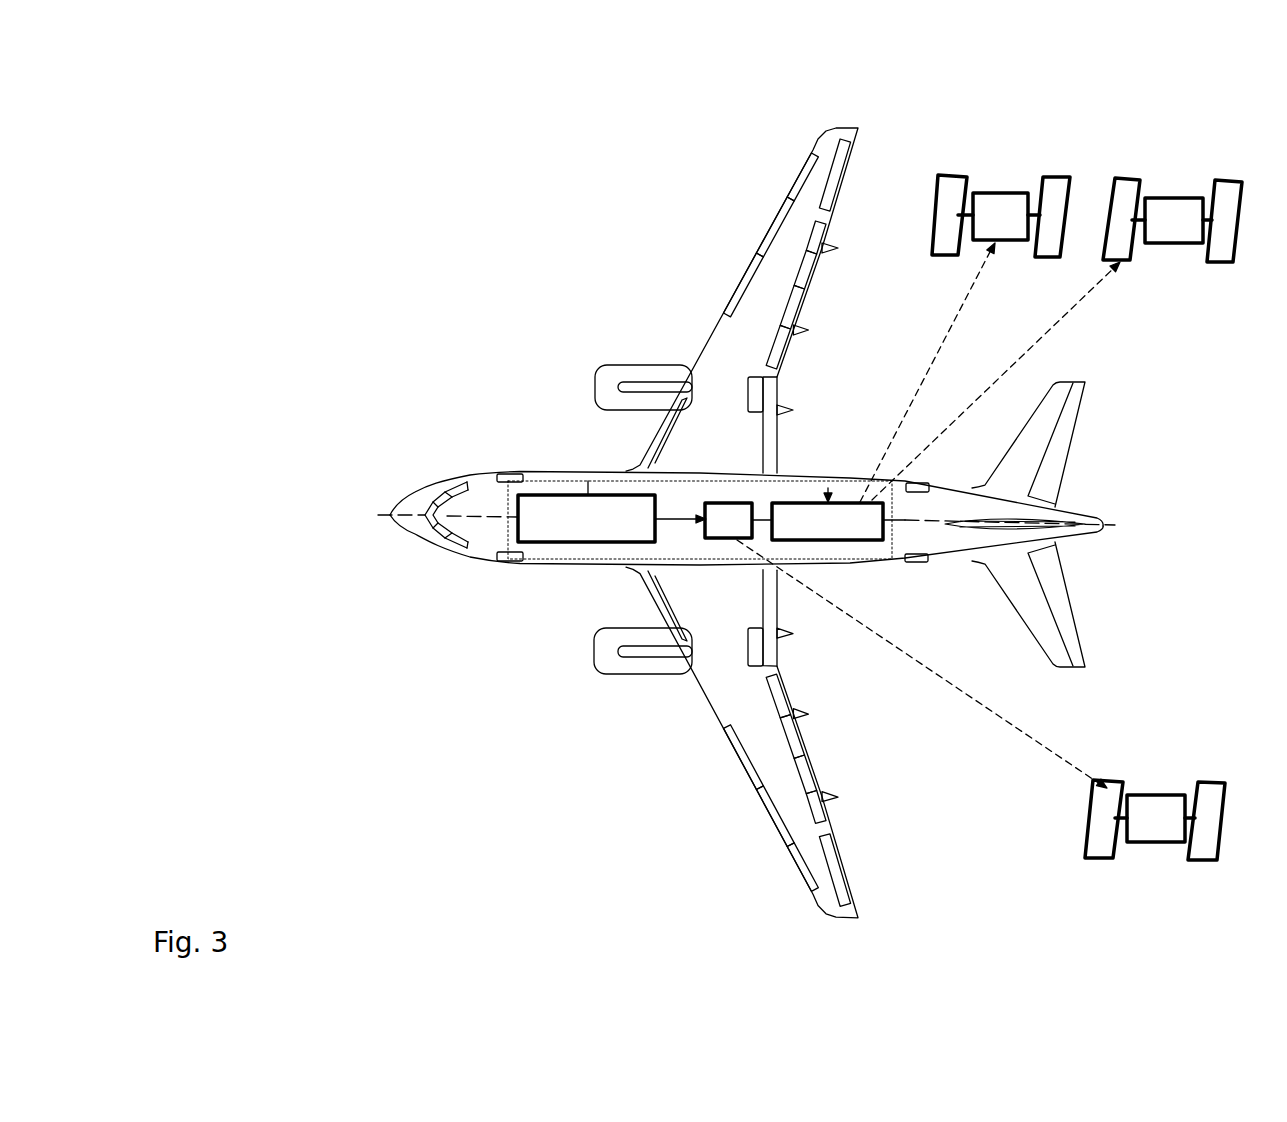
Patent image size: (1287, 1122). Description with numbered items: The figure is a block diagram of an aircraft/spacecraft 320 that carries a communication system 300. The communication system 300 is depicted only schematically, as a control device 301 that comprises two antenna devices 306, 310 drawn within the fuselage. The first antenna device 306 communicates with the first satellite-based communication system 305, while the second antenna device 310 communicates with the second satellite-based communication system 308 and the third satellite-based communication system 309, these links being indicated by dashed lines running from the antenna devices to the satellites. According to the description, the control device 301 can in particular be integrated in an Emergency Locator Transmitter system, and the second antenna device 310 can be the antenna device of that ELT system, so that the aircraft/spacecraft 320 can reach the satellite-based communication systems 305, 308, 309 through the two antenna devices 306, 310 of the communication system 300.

The communication system 300 is at (563, 564).
The control device 301 is at (553, 494).
The first satellite-based communication system 305 is at (1158, 842).
The first antenna device 306 is at (738, 502).
The second satellite-based communication system 308 is at (1000, 192).
The third satellite-based communication system 309 is at (1172, 198).
The second antenna device 310 is at (848, 502).
The aircraft/spacecraft 320 is at (406, 532).